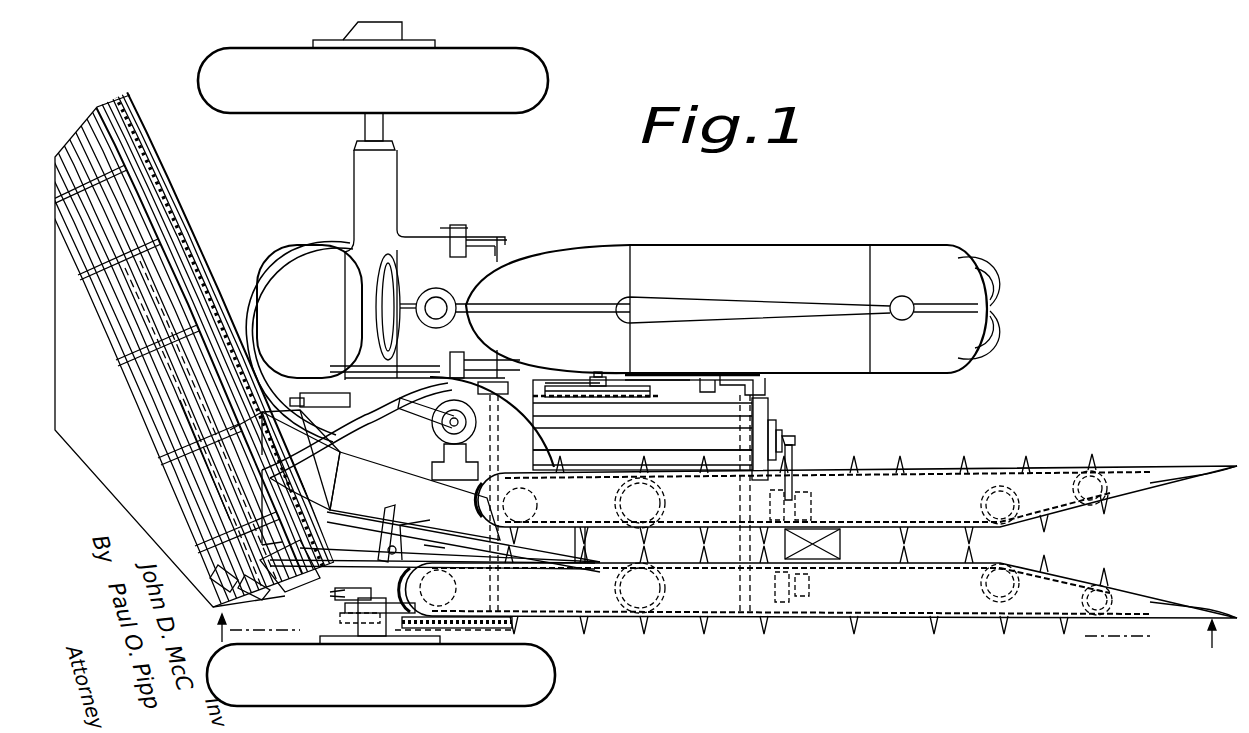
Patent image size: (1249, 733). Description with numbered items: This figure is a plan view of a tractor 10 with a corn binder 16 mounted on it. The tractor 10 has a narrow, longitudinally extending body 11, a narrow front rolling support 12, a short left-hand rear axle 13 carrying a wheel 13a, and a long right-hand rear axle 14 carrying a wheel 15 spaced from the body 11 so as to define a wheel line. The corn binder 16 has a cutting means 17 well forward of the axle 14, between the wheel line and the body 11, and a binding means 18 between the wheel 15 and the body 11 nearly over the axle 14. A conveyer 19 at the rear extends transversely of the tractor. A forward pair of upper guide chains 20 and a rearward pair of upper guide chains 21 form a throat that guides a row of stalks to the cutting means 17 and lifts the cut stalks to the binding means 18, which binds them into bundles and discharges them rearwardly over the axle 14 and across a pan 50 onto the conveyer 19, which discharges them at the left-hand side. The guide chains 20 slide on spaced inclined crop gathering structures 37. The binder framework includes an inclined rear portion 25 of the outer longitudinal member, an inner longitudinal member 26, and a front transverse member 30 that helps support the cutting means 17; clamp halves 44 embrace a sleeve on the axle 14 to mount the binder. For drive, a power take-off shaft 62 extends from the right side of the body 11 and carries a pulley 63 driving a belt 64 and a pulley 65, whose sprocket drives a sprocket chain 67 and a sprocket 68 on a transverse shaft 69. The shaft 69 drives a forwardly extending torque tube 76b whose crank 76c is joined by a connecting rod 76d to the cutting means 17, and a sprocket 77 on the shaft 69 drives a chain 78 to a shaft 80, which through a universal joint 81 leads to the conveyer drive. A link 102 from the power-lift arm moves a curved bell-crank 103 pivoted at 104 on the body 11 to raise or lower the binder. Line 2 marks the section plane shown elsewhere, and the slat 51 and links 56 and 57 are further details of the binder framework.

The section line 2- 2 is at (716, 631).
The tractor 10 is at (721, 290).
The tractor body 11 is at (768, 278).
The front rolling support 12 is at (1000, 300).
The left-hand rear axle 13 is at (385, 130).
The wheel 13a is at (540, 85).
The right-hand rear axle 14 is at (375, 610).
The wheel 15 is at (425, 700).
The corn binder 16 is at (856, 488).
The cutting means 17 is at (800, 541).
The binding means 18 is at (472, 533).
The conveyer 19 is at (181, 362).
The forward pair of upper guide chains 20 is at (818, 585).
The rearward pair of upper guide chains 21 is at (612, 535).
The rear portion 25 is at (330, 572).
The inner longitudinal member 26 is at (318, 412).
The front transverse member 30 is at (768, 412).
The inclined crop gathering structures 37 is at (983, 478).
The clamp half 44 is at (335, 600).
The pan 50 is at (378, 501).
The rake slat 51 is at (205, 460).
The link 56 is at (240, 588).
The link 57 is at (272, 590).
The power take-off shaft 62 is at (598, 372).
The pulley 63 is at (572, 386).
The belt 64 is at (560, 388).
The pulley 65 is at (545, 386).
The sprocket chain 67 is at (562, 408).
The sprocket 68 is at (498, 420).
The transverse shaft 69 is at (500, 458).
The torque tube 76b is at (660, 452).
The crank 76c is at (795, 440).
The connecting rod 76d is at (792, 460).
The sprocket 77 is at (505, 628).
The chain 78 is at (470, 630).
The shaft 80 is at (345, 612).
The universal joint 81 is at (385, 550).
The link 102 is at (678, 375).
The bell-crank 103 is at (752, 378).
The pivot 104 is at (708, 376).